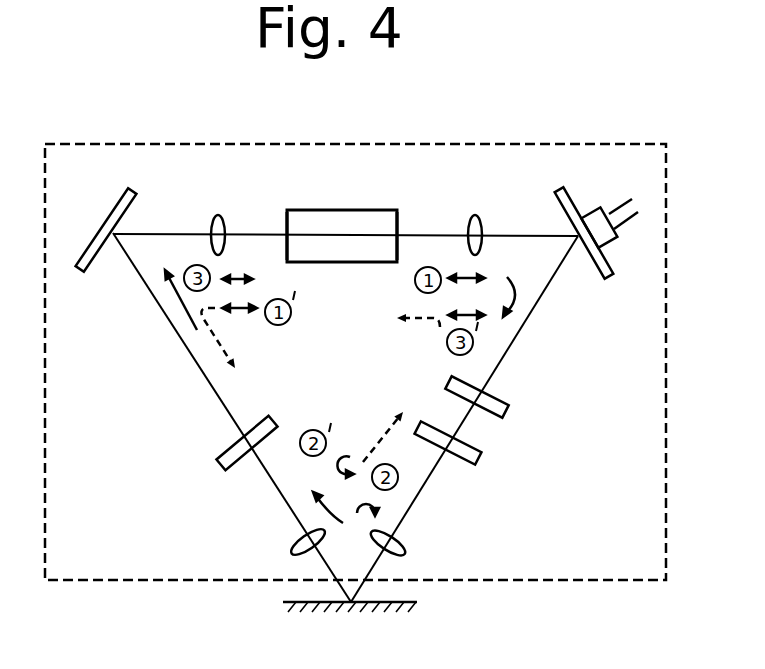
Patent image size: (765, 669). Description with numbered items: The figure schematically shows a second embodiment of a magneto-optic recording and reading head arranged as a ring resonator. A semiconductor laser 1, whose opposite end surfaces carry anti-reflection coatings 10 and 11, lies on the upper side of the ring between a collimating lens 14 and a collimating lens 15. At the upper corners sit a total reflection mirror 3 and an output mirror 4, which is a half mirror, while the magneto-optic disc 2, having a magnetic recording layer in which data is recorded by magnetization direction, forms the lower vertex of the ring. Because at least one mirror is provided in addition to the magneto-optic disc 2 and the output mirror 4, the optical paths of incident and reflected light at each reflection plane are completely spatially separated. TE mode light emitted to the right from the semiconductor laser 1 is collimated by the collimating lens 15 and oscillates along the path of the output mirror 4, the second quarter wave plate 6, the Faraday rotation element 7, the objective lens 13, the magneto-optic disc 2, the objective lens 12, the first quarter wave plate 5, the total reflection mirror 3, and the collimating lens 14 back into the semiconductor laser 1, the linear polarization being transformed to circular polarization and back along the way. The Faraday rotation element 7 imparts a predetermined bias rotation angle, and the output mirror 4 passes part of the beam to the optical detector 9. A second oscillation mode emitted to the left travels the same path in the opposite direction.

The semiconductor laser 1 is at (343, 210).
The magneto-optic disc 2 is at (400, 602).
The total reflection mirror 3 is at (85, 246).
The output mirror 4 is at (612, 270).
The first quarter wave plate 5 is at (216, 459).
The second quarter wave plate 6 is at (505, 416).
The Faraday rotation element 7 is at (478, 466).
The optical detector 9 is at (613, 237).
The anti-reflection coating 10 is at (287, 222).
The anti-reflection coating 11 is at (399, 228).
The objective lens 12 is at (292, 546).
The objective lens 13 is at (404, 546).
The collimating lens 14 is at (214, 215).
The collimating lens 15 is at (478, 215).